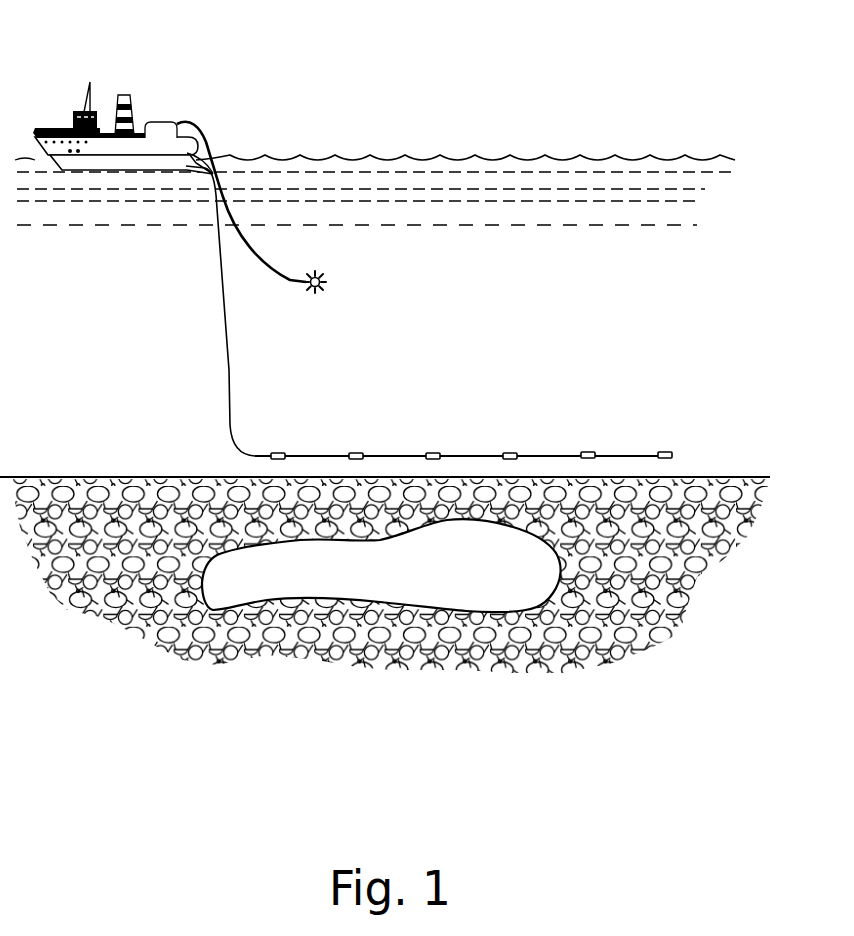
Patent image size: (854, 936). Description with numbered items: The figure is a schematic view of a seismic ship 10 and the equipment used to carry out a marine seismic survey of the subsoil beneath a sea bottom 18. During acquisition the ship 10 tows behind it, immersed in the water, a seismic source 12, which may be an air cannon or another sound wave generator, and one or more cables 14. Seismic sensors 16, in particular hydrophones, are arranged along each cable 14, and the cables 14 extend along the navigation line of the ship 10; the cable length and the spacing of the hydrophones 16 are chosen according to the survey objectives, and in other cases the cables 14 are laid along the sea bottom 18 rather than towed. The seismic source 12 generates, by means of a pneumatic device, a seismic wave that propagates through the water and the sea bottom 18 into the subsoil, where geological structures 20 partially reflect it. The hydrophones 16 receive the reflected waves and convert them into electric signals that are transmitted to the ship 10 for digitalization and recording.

The seismic ship 10 is at (58, 108).
The seismic source 12 is at (326, 275).
The cable 14 is at (227, 327).
The seismic sensors 16 is at (284, 452).
The sea bottom 18 is at (53, 478).
The geological structures 20 is at (253, 605).